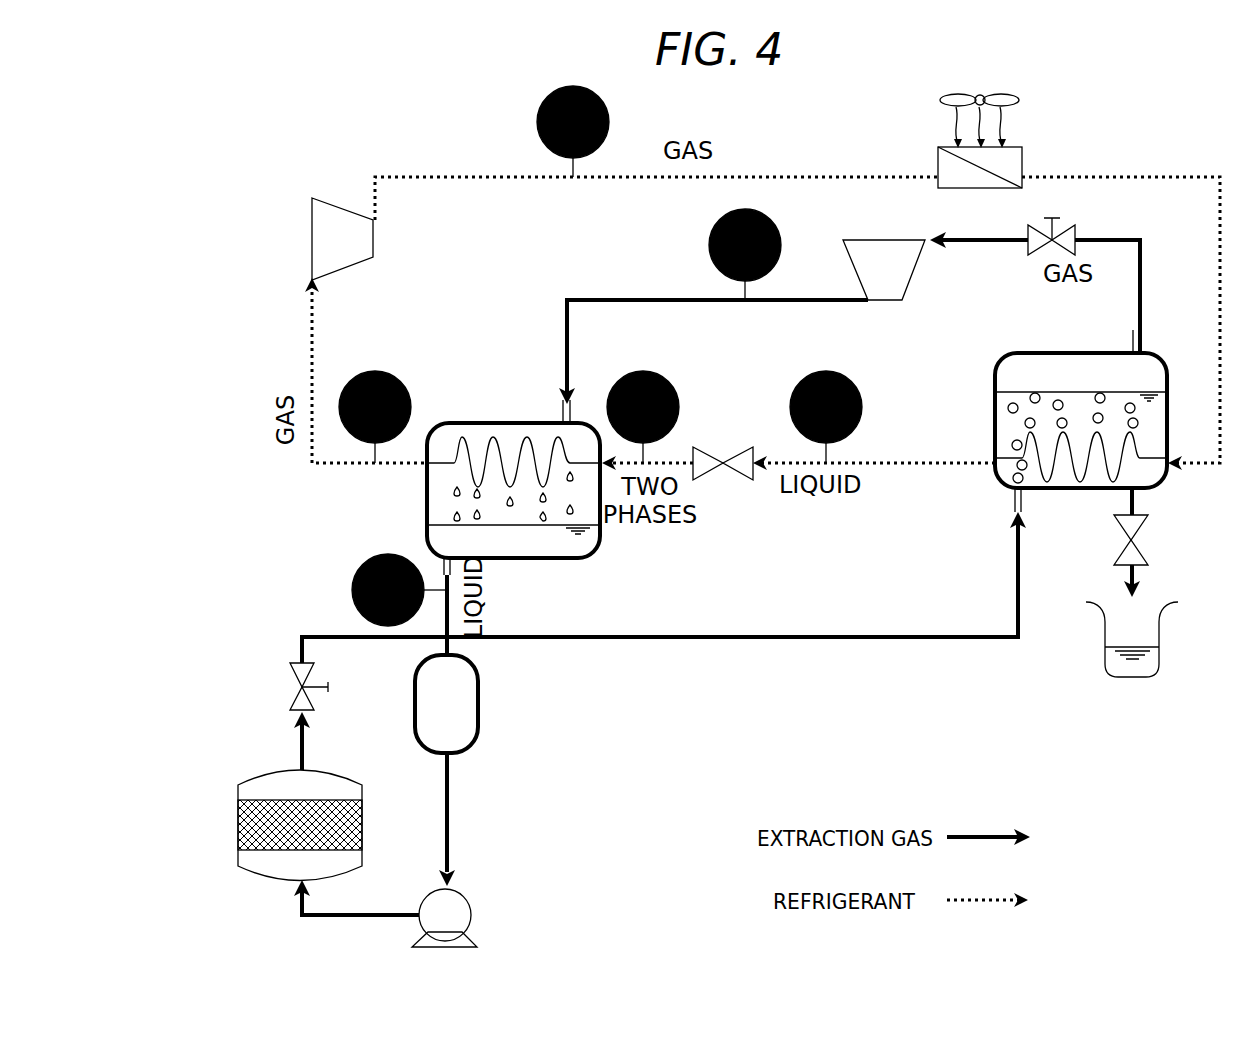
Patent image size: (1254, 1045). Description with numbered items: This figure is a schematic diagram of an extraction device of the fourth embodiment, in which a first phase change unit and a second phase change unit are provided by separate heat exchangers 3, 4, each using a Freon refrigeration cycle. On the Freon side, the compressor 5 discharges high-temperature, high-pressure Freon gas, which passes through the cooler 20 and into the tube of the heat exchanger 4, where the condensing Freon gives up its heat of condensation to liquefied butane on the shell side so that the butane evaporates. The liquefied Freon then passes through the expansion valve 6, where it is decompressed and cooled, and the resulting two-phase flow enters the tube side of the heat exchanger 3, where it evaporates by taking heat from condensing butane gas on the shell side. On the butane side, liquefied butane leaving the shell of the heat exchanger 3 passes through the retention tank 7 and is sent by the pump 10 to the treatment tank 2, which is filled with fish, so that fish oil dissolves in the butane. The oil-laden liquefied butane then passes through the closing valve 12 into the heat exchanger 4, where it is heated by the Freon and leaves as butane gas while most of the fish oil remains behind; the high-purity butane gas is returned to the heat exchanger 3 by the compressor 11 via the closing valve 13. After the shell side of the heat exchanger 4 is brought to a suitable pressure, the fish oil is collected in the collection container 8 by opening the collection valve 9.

The treatment tank 2 is at (238, 860).
The heat exchanger 3 is at (470, 421).
The heat exchanger 4 is at (1030, 352).
The compressor 5 is at (312, 248).
The expansion valve 6 is at (742, 446).
The retention tank 7 is at (481, 722).
The collection container 8 is at (1097, 654).
The collection valve 9 is at (1148, 556).
The pump 10 is at (462, 888).
The compressor 11 is at (883, 303).
The closing valve 12 is at (320, 706).
The closing valve 13 is at (1077, 233).
The cooler 20 is at (1024, 152).